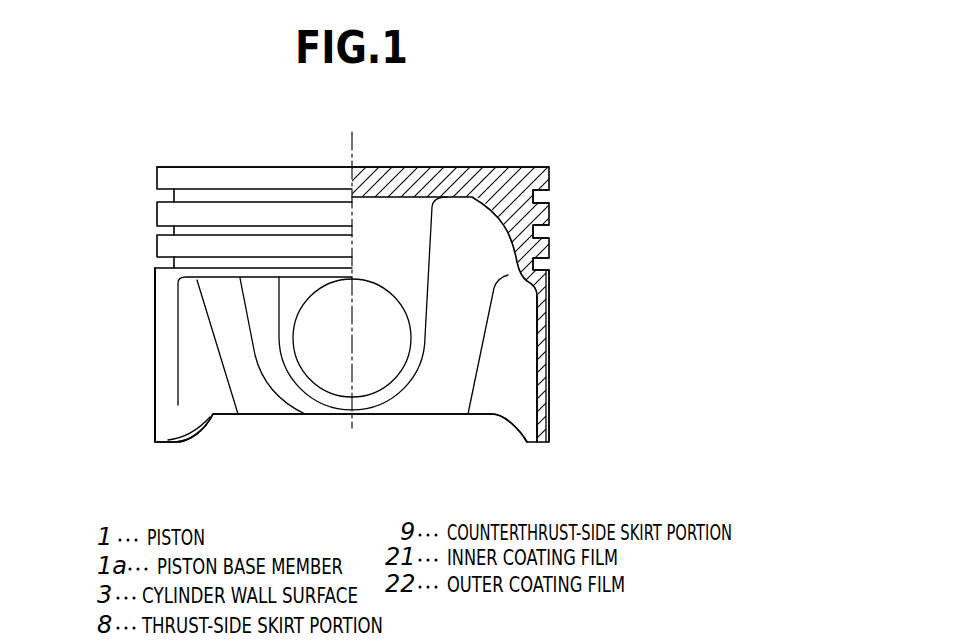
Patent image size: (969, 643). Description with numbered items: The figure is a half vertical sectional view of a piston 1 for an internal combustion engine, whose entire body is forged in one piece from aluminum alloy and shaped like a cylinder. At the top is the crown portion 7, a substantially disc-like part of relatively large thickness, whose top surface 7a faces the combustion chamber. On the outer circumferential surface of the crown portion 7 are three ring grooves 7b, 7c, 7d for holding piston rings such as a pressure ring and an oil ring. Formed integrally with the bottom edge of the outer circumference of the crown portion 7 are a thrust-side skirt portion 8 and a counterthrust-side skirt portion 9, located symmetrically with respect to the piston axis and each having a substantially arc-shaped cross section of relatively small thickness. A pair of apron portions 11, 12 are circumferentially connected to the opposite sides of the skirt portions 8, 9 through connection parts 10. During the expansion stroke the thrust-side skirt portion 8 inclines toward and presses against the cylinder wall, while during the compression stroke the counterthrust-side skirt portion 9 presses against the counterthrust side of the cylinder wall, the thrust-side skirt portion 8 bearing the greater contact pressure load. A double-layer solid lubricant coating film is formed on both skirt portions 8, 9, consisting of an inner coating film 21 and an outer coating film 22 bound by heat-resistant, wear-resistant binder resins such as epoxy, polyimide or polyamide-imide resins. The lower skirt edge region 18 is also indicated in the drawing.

The piston 1 is at (560, 169).
The crown portion 7 is at (493, 168).
The top surface 7a is at (420, 168).
The ring groove 7b is at (542, 198).
The ring groove 7c is at (542, 236).
The ring groove 7d is at (542, 268).
The thrust-side skirt portion 8 is at (155, 335).
The counterthrust-side skirt portion 9 is at (543, 333).
The connection part 10 is at (195, 393).
The apron portion 11 is at (255, 403).
The apron portion 12 is at (425, 397).
The skirt lower end 18 is at (500, 405).
The inner coating film 21 is at (153, 292).
The outer coating film 22 is at (557, 303).